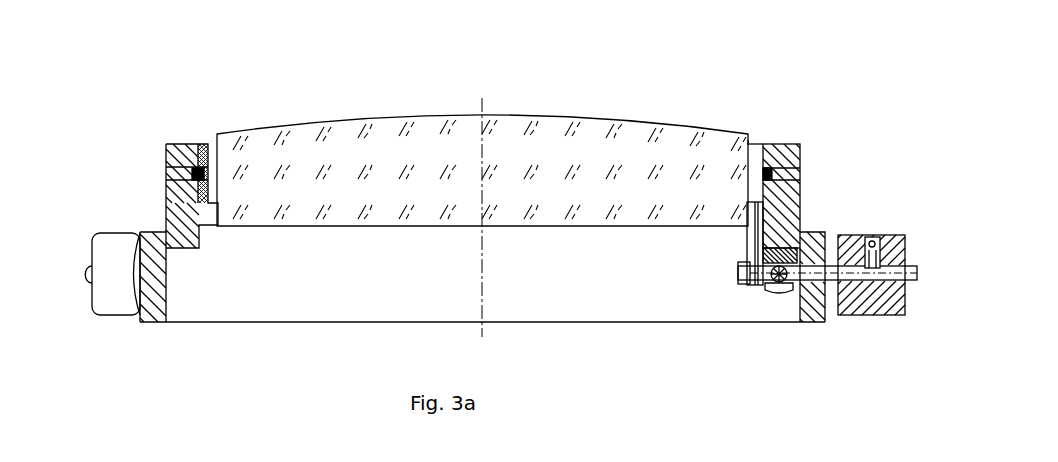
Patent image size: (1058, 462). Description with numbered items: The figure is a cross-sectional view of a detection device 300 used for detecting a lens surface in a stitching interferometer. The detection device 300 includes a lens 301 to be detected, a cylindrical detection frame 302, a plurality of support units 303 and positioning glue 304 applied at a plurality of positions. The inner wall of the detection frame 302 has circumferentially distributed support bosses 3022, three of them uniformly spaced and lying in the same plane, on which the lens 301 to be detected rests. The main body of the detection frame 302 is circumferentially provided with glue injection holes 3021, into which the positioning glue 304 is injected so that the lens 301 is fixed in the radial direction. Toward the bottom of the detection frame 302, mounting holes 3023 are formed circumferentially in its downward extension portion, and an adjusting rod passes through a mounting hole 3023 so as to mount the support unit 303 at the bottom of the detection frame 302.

The detection device 300 is at (537, 105).
The lens to be detected 301 is at (702, 162).
The detection frame 302 is at (780, 155).
The glue injection holes 3021 is at (192, 173).
The support bosses 3022 is at (207, 207).
The mounting holes 3023 is at (812, 262).
The support unit 303 is at (877, 237).
The positioning glue 304 is at (203, 182).